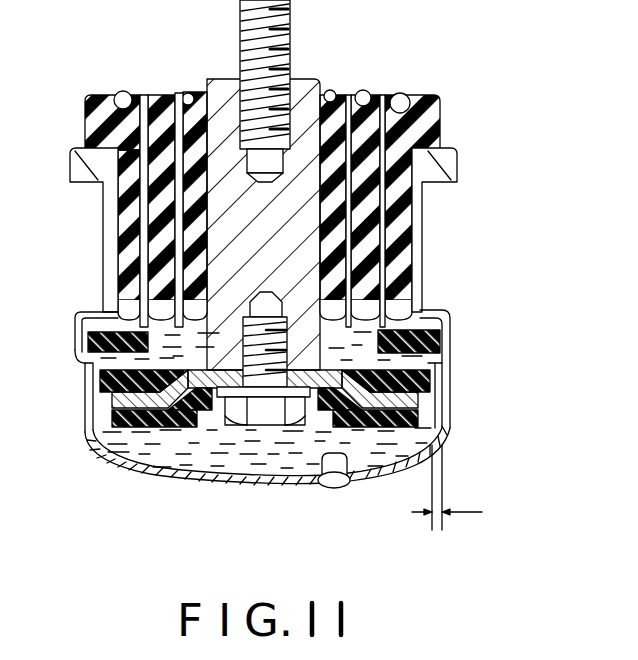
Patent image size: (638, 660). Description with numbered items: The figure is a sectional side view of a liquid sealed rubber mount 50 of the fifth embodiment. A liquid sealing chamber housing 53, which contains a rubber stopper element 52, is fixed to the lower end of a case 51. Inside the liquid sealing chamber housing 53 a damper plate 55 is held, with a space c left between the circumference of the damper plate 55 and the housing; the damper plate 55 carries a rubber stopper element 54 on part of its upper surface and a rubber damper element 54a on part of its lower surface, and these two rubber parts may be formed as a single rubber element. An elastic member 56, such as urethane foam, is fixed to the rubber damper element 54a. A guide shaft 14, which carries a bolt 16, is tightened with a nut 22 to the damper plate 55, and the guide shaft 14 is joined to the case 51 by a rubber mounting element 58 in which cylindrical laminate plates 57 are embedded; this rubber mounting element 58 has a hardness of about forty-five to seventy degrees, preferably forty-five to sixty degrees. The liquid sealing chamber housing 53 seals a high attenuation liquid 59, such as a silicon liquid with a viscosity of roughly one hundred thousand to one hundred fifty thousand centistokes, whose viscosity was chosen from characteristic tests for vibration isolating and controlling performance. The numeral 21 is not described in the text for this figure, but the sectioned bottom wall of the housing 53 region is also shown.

The guide shaft 14 is at (310, 85).
The bolt 16 is at (241, 14).
The bottom wall of cup 21 is at (124, 460).
The nut 22 is at (268, 415).
The liquid sealed rubber mount 50 is at (515, 73).
The case 51 is at (418, 236).
The rubber stopper element 52 is at (446, 332).
The liquid sealing chamber housing 53 is at (443, 402).
The rubber stopper element 54 is at (219, 466).
The rubber damper element 54a is at (203, 404).
The damper plate 55 is at (116, 403).
The elastic member 56 is at (110, 418).
The cylindrical laminate plates 57 is at (352, 100).
The rubber mounting element 58 is at (93, 97).
The high attenuation liquid 59 is at (188, 462).